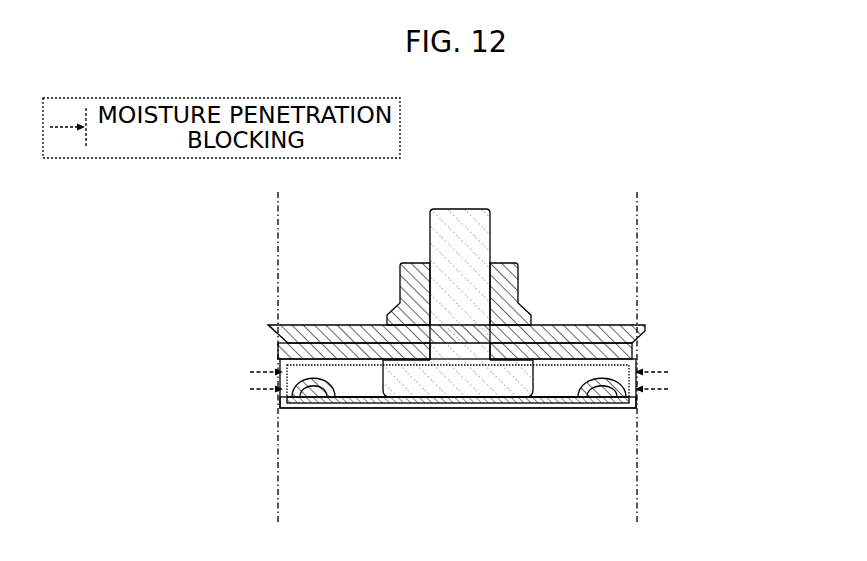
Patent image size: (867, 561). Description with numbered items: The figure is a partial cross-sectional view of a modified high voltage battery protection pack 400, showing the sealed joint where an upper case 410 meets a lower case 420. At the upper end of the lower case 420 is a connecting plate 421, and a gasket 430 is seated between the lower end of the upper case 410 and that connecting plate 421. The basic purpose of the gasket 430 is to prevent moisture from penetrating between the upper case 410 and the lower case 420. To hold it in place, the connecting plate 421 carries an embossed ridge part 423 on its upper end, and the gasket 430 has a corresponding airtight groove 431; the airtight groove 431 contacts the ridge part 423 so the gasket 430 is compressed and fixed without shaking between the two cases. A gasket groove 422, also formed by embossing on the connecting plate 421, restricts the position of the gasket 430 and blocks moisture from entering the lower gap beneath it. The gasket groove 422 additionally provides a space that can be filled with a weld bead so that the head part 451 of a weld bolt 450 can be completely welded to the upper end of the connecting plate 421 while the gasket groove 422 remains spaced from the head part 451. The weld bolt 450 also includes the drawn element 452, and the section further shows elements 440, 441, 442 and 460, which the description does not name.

The high voltage battery protection pack 400 is at (481, 113).
The upper case 410 is at (533, 352).
The lower case 420 is at (497, 415).
The connecting plate 421 is at (410, 408).
The gasket groove 422 is at (587, 406).
The ridge part 423 is at (289, 409).
The gasket 430 is at (367, 395).
The airtight groove 431 is at (309, 406).
The upper plate 440 is at (638, 357).
The support block 441 is at (519, 265).
The lower plate 442 is at (602, 351).
The weld bolt 450 is at (480, 196).
The head part 451 is at (478, 400).
The sensor terminal 452 is at (490, 210).
The coating layer 460 is at (404, 288).